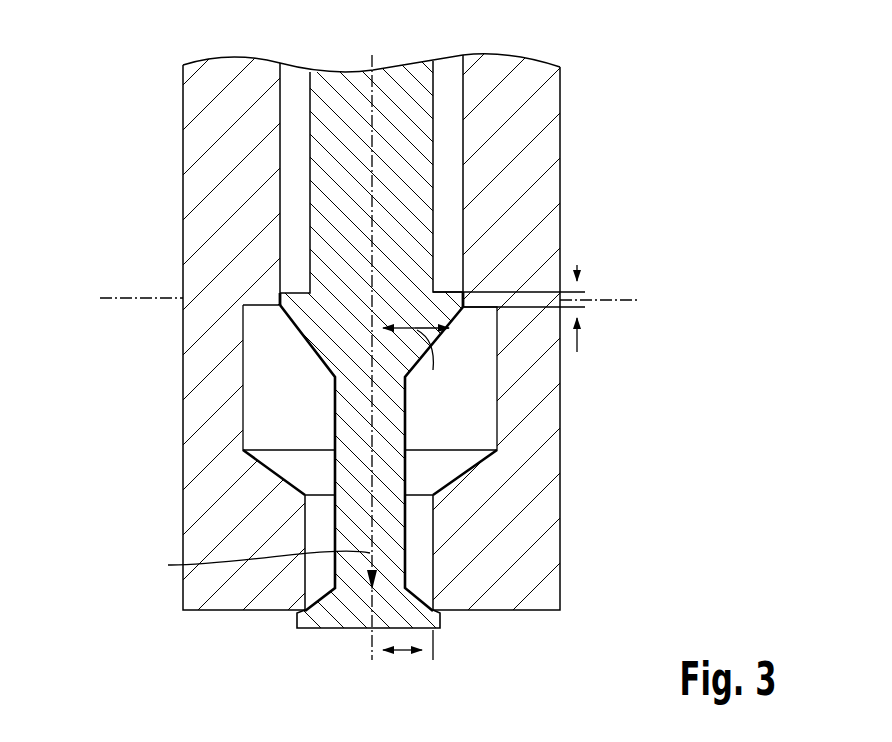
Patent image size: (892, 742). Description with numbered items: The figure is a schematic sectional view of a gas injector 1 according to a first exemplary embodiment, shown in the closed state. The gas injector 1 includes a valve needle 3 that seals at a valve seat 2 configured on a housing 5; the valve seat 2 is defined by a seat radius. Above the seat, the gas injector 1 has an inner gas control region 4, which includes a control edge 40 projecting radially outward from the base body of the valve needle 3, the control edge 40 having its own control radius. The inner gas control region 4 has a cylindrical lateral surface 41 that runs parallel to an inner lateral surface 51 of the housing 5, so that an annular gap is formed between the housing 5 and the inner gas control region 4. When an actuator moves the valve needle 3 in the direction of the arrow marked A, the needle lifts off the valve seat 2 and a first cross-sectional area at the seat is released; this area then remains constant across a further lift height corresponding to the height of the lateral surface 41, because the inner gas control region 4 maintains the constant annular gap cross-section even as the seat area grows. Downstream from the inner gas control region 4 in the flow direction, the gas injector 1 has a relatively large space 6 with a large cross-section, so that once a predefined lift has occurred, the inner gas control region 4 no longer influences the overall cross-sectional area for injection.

The gas injector 1 is at (122, 142).
The valve seat 2 is at (310, 628).
The valve needle 3 is at (437, 378).
The inner gas control region 4 is at (460, 271).
The housing 5 is at (528, 110).
The space 6 is at (480, 403).
The control edge 40 is at (280, 294).
The cylindrical lateral surface 41 is at (278, 306).
The inner lateral surface 51 is at (448, 229).